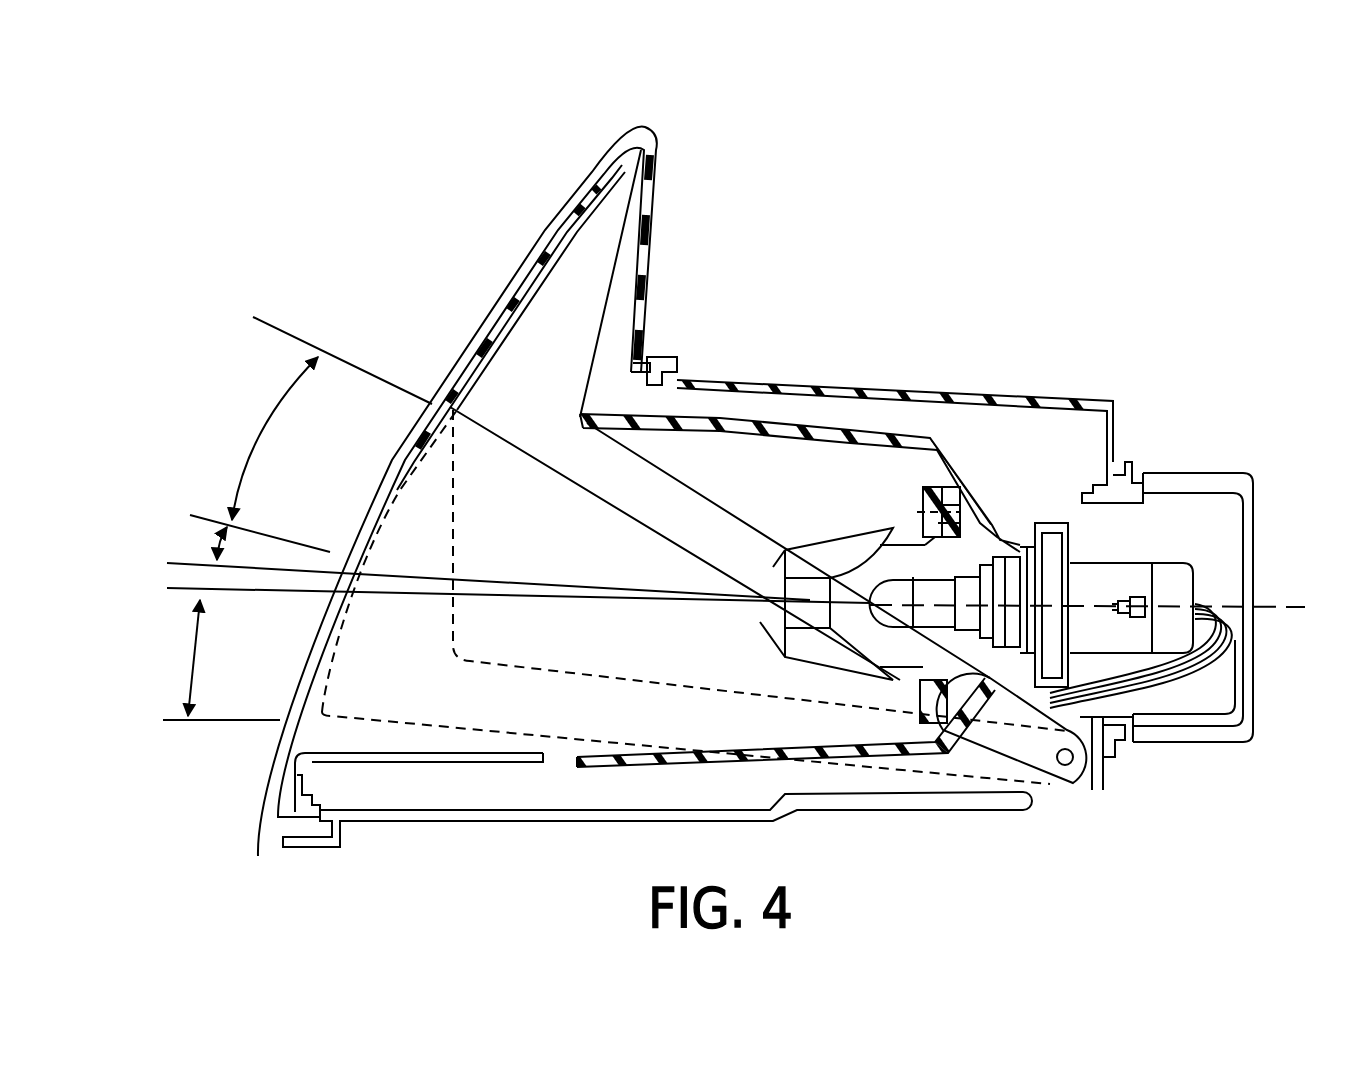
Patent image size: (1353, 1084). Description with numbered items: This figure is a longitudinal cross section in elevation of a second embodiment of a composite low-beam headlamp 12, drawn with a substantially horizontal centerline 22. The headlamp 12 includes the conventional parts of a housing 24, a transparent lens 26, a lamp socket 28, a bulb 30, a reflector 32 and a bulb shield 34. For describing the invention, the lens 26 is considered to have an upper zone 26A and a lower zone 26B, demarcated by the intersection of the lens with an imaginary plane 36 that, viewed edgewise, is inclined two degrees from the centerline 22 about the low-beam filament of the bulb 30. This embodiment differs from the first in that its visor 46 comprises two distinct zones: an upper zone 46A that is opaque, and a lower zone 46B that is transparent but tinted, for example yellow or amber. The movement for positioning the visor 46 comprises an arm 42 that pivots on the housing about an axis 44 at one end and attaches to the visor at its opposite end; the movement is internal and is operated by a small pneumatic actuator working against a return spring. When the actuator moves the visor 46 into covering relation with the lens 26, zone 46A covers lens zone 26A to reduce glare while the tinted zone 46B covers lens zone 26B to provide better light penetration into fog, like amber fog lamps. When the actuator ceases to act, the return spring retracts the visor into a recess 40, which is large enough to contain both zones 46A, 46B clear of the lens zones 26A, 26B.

The headlamp 12 is at (781, 374).
The centerline 22 is at (232, 588).
The housing 24 is at (857, 388).
The lens 26 is at (417, 427).
The upper zone 26A is at (268, 426).
The lower zone 26B is at (197, 670).
The lamp socket 28 is at (1200, 566).
The bulb 30 is at (965, 555).
The reflector 32 is at (680, 767).
The bulb shield 34 is at (828, 540).
The imaginary plane 36 is at (268, 555).
The recess 40 is at (637, 217).
The arm 42 is at (706, 580).
The axis 44 is at (1068, 763).
The visor 46 is at (577, 233).
The upper zone 46A is at (620, 177).
The lower zone 46B is at (538, 290).